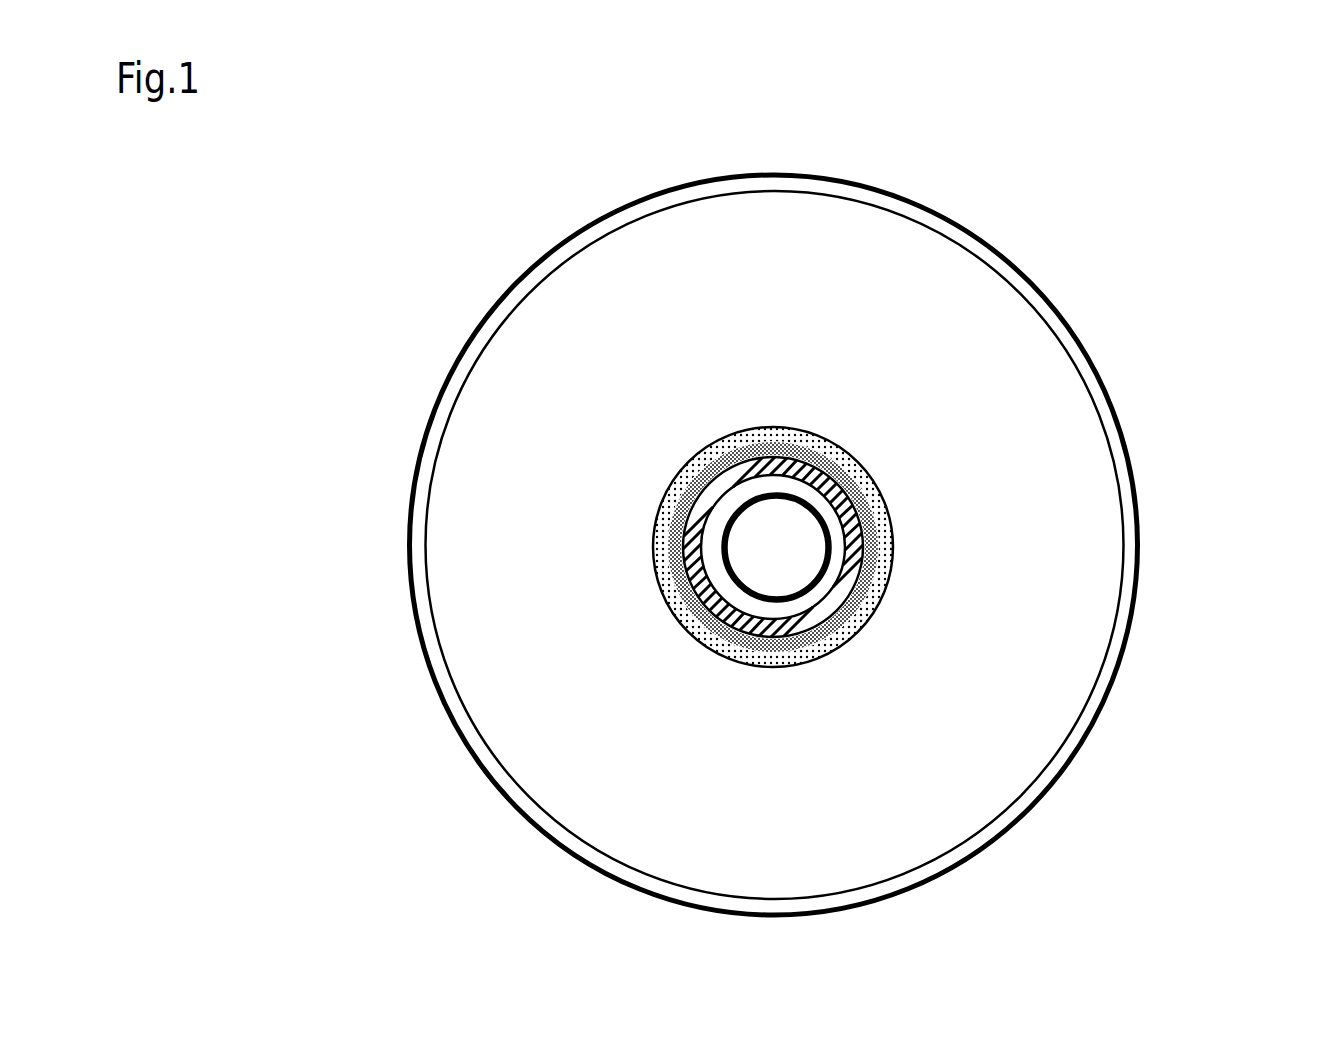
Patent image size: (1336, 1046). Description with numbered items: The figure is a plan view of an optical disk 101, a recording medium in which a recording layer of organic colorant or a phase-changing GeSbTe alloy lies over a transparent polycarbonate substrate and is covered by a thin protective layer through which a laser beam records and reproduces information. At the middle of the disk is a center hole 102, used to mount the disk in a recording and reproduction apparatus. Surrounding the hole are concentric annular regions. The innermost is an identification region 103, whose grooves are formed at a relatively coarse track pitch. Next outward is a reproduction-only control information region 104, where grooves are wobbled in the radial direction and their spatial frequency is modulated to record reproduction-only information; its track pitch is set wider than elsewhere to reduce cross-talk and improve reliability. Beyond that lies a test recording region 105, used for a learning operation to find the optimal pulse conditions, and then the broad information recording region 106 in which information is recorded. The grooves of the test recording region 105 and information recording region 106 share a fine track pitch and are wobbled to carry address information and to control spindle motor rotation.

The optical disk 101 is at (1010, 197).
The center hole 102 is at (752, 530).
The identification region 103 is at (860, 513).
The reproduction-only control information region 104 is at (877, 542).
The test recording region 105 is at (888, 575).
The information recording region 106 is at (968, 658).